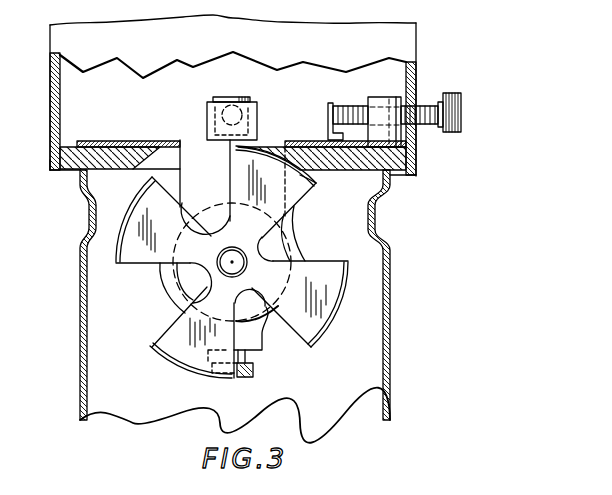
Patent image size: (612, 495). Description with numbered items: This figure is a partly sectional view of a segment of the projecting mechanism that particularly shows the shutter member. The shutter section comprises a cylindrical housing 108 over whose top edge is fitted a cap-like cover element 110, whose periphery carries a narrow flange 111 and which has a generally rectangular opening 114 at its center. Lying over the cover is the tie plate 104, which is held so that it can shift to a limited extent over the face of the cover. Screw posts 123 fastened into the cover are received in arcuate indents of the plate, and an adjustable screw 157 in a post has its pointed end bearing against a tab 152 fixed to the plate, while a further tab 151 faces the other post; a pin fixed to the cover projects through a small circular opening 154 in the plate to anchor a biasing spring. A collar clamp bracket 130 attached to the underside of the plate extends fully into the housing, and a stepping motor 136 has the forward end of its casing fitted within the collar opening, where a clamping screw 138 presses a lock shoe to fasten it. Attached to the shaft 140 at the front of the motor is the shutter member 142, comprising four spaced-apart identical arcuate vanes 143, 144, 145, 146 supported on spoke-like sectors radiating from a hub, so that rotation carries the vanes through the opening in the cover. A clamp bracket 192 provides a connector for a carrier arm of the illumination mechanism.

The tie plate 104 is at (142, 142).
The cylindrical housing 108 is at (392, 331).
The cap-like cover element 110 is at (72, 153).
The narrow flange 111 is at (408, 172).
The rectangular opening 114 is at (322, 164).
The screw posts 123 is at (381, 96).
The collar clamp bracket 130 is at (298, 245).
The stepping motor 136 is at (215, 216).
The clamping screw 138 is at (250, 377).
The shaft 140 is at (257, 324).
The shutter member 142 is at (180, 368).
The arcuate vane 143 is at (139, 258).
The arcuate vane 144 is at (297, 196).
The arcuate vane 145 is at (324, 323).
The arcuate vane 146 is at (167, 337).
The tab 151 is at (207, 113).
The tab 152 is at (327, 114).
The small circular opening 154 is at (233, 97).
The screw 157 is at (461, 110).
The clamp bracket 192 is at (55, 174).